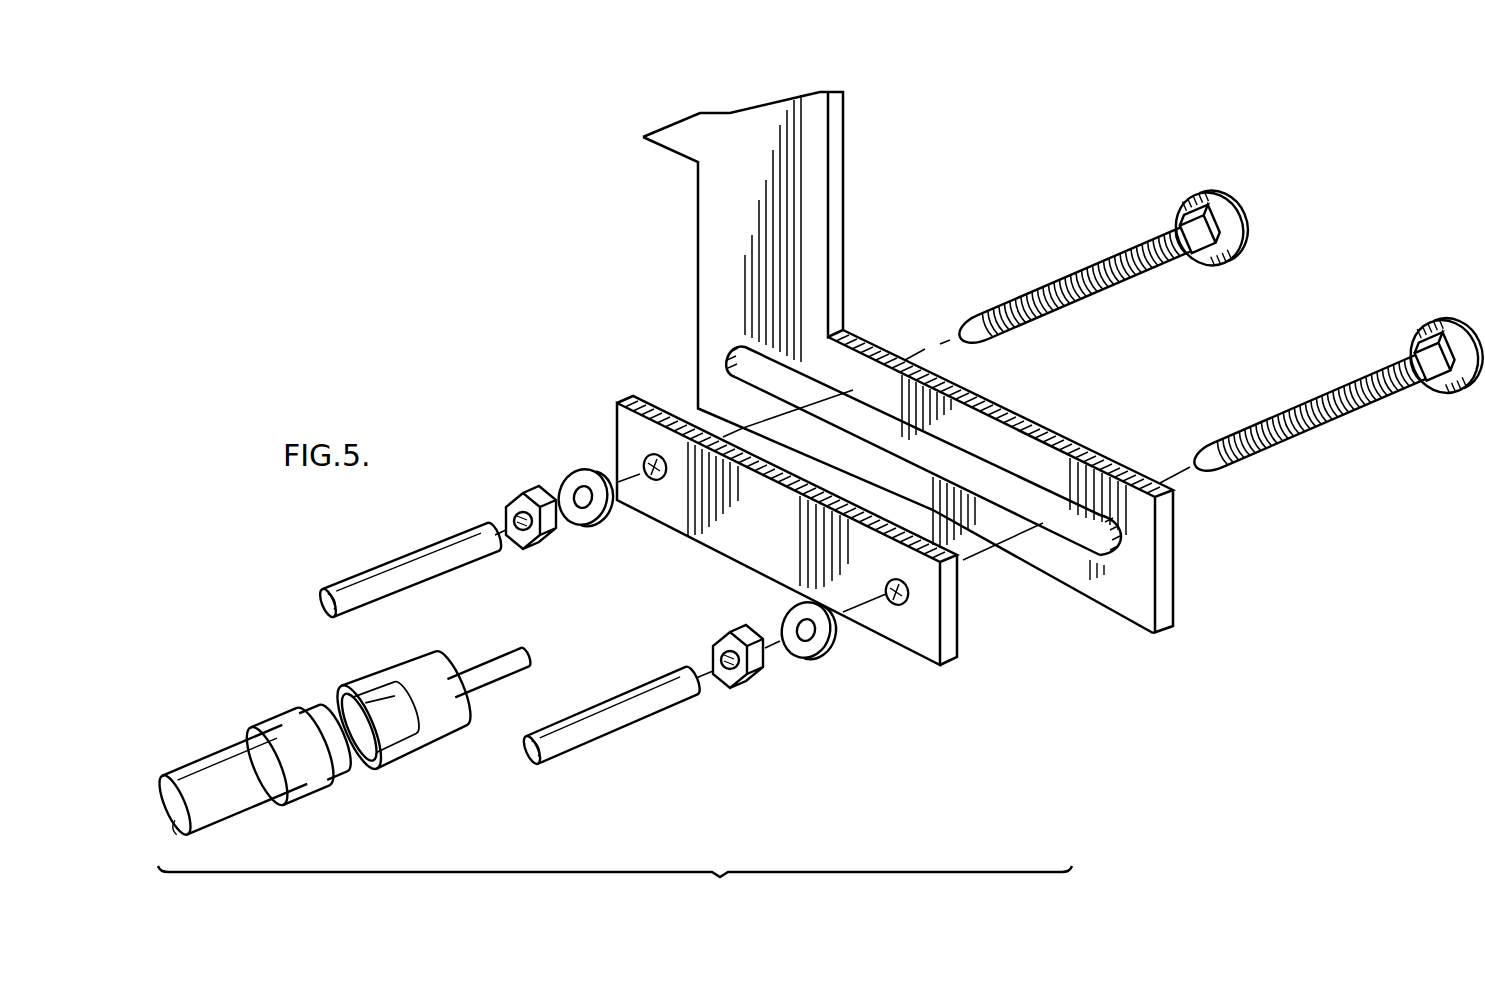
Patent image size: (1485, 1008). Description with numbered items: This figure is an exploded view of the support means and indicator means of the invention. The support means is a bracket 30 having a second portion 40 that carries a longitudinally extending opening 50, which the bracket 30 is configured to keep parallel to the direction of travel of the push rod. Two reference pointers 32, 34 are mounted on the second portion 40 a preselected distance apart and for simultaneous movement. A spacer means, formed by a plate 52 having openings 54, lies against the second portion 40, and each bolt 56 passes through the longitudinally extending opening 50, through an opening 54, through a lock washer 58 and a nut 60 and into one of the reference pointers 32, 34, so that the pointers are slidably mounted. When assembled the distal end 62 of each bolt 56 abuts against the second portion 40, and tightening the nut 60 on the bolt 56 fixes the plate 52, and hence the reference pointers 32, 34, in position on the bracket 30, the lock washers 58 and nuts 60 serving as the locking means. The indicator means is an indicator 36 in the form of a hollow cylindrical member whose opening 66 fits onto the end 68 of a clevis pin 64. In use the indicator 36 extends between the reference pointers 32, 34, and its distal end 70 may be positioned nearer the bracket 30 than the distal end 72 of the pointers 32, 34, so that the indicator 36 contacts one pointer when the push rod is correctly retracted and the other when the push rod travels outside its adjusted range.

The bracket 30 is at (833, 229).
The reference pointer 32 is at (367, 567).
The reference pointer 34 is at (610, 737).
The indicator 36 is at (455, 751).
The second portion 40 is at (1080, 445).
The longitudinally extending opening 50 is at (1103, 557).
The plate 52 is at (931, 616).
The opening 54 is at (641, 458).
The bolt 56 is at (1073, 262).
The lock washer 58 is at (592, 519).
The nut 60 is at (538, 545).
The distal end 62 is at (1242, 216).
The clevis pin 64 is at (255, 826).
The opening 66 is at (353, 685).
The end 68 is at (337, 763).
The distal end 70 is at (527, 643).
The distal end 72 is at (320, 607).